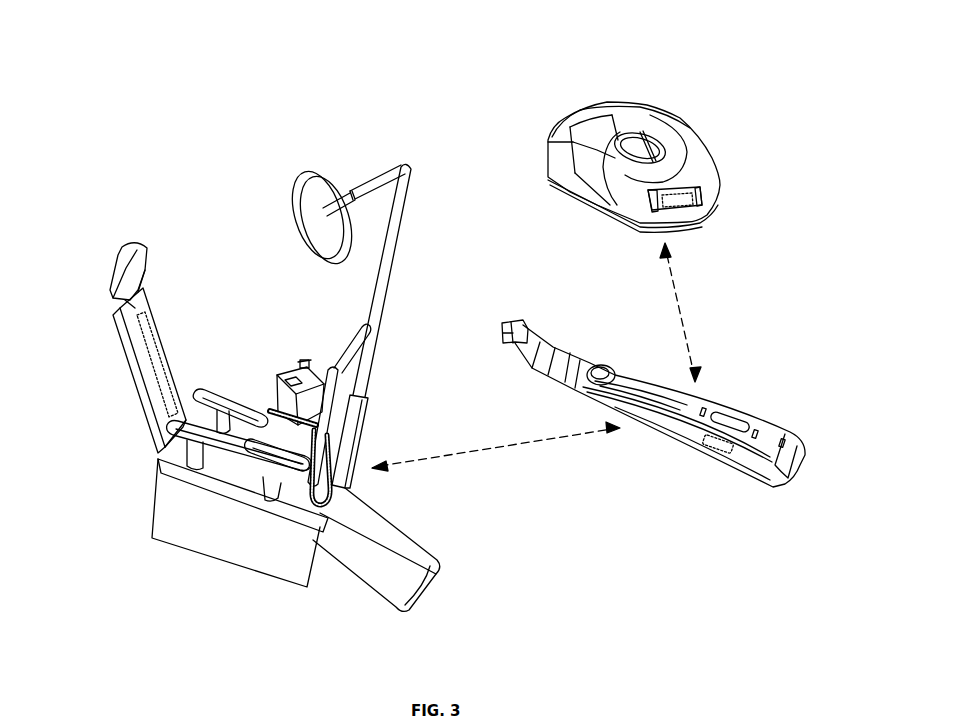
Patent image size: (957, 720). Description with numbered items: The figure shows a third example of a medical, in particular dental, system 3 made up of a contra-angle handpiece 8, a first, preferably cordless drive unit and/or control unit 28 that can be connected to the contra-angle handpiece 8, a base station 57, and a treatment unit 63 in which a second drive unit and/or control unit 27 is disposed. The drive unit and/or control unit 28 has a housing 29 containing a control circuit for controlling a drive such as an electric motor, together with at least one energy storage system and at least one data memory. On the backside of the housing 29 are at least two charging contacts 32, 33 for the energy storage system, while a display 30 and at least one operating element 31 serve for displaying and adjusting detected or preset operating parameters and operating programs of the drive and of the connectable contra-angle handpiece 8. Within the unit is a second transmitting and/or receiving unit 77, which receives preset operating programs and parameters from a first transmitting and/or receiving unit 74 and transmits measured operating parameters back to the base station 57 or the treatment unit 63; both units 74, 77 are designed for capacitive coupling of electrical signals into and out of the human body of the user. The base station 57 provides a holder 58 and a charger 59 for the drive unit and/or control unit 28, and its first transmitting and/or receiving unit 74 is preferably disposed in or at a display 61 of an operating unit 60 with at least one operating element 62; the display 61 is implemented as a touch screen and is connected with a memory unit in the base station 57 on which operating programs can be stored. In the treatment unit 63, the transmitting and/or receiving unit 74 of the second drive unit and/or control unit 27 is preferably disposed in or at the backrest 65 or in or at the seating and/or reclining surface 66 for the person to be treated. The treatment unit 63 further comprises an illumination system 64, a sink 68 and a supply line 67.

The dental system 3 is at (793, 62).
The contra-angle handpiece 8 is at (553, 357).
The second drive unit and/or control unit 27 is at (298, 432).
The first drive unit and/or control unit 28 is at (686, 432).
The housing 29 is at (642, 392).
The display 30 is at (738, 420).
The operating element 31 is at (703, 407).
The charging contact 32 is at (786, 442).
The charging contact 33 is at (780, 460).
The base station 57 is at (589, 118).
The holder 58 is at (633, 147).
The charger 59 is at (638, 158).
The operating unit 60 is at (686, 189).
The display 61 is at (678, 210).
The operating element 62 is at (656, 202).
The treatment unit 63 is at (208, 525).
The illumination system 64 is at (315, 193).
The backrest 65 is at (140, 380).
The seating and/or reclining surface 66 is at (182, 447).
The supply line 67 is at (357, 343).
The sink 68 is at (289, 373).
The first transmitting and/or receiving unit 74 is at (142, 340).
The second transmitting and/or receiving unit 77 is at (714, 450).